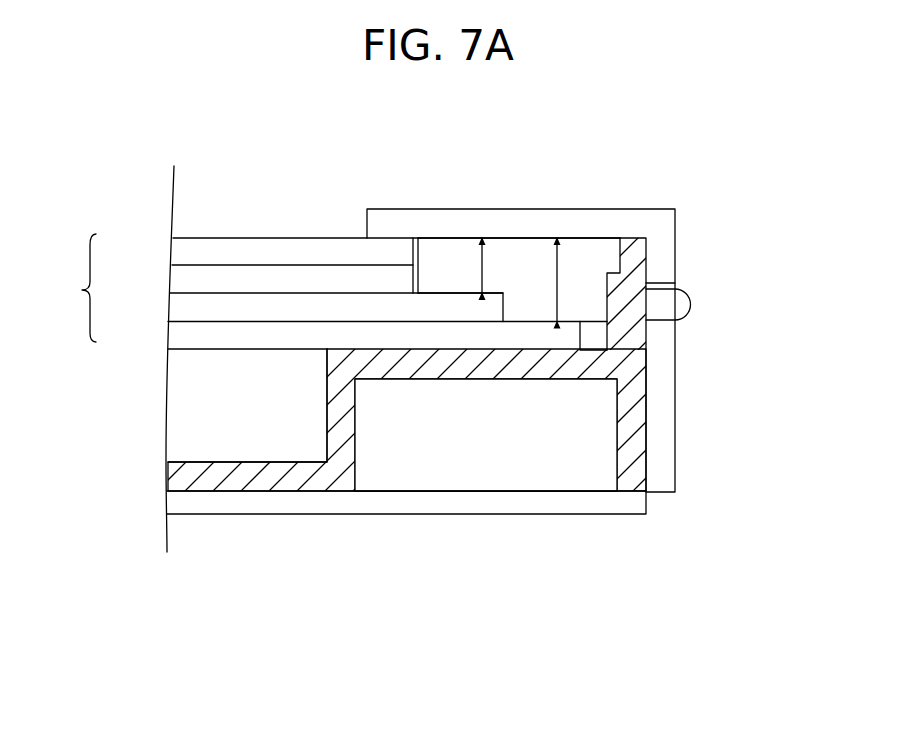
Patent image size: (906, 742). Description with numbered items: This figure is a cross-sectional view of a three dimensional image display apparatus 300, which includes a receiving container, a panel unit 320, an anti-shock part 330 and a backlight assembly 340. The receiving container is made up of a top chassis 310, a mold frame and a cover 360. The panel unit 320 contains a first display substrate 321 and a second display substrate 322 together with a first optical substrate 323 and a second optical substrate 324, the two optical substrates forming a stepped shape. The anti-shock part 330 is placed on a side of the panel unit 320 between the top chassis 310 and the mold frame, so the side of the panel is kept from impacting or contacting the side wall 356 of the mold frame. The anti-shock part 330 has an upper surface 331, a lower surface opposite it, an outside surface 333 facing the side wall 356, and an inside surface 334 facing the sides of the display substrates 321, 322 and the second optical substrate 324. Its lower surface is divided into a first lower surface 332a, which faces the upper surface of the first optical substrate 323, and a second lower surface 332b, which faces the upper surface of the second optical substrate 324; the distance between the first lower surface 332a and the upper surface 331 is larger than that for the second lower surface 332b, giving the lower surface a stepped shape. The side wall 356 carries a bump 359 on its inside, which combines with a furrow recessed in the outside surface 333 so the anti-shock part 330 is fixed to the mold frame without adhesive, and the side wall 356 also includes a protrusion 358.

The three dimensional image display apparatus 300 is at (675, 537).
The top chassis 310 is at (667, 232).
The panel unit 320 is at (69, 288).
The first display substrate 321 is at (182, 277).
The second display substrate 322 is at (182, 247).
The first optical substrate 323 is at (182, 333).
The second optical substrate 324 is at (182, 305).
The anti-shock part 330 is at (588, 257).
The upper surface 331 is at (492, 238).
The first lower surface 332a is at (521, 320).
The second lower surface 332b is at (447, 293).
The outside surface 333 is at (620, 256).
The inside surface 334 is at (412, 252).
The backlight assembly 340 is at (180, 404).
The side wall 356 is at (637, 339).
The protrusion 358 is at (684, 306).
The bump 359 is at (665, 282).
The cover 360 is at (477, 506).